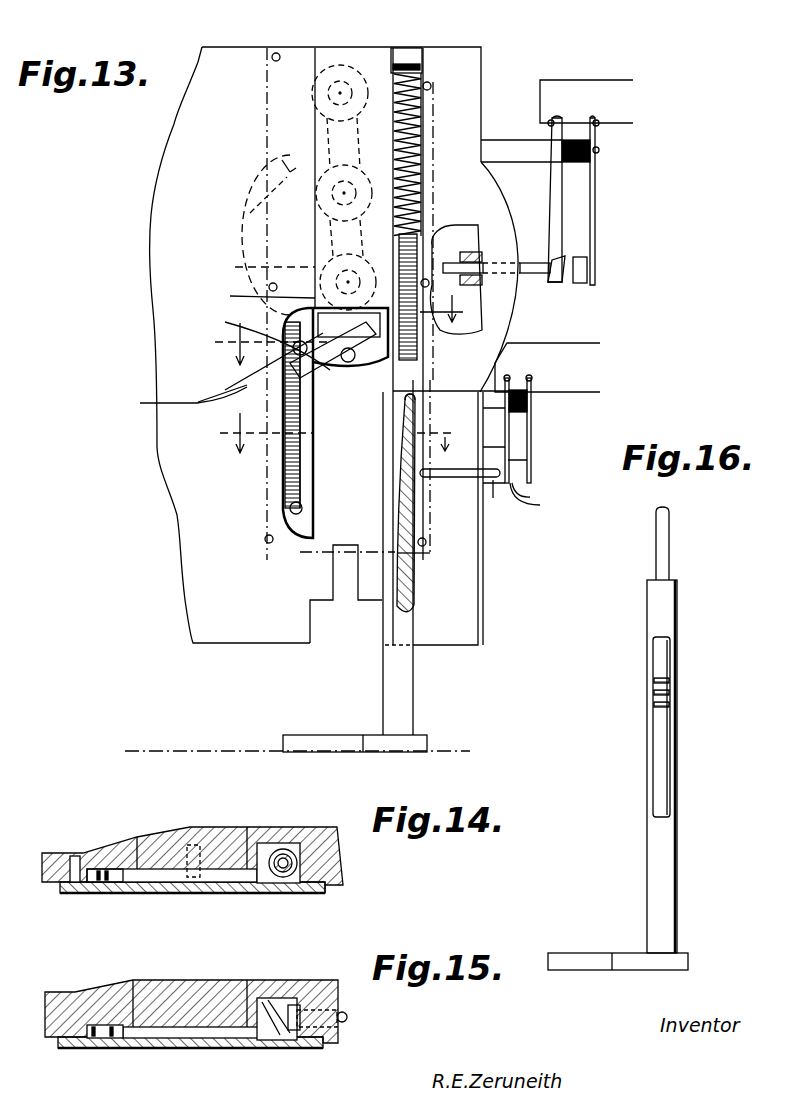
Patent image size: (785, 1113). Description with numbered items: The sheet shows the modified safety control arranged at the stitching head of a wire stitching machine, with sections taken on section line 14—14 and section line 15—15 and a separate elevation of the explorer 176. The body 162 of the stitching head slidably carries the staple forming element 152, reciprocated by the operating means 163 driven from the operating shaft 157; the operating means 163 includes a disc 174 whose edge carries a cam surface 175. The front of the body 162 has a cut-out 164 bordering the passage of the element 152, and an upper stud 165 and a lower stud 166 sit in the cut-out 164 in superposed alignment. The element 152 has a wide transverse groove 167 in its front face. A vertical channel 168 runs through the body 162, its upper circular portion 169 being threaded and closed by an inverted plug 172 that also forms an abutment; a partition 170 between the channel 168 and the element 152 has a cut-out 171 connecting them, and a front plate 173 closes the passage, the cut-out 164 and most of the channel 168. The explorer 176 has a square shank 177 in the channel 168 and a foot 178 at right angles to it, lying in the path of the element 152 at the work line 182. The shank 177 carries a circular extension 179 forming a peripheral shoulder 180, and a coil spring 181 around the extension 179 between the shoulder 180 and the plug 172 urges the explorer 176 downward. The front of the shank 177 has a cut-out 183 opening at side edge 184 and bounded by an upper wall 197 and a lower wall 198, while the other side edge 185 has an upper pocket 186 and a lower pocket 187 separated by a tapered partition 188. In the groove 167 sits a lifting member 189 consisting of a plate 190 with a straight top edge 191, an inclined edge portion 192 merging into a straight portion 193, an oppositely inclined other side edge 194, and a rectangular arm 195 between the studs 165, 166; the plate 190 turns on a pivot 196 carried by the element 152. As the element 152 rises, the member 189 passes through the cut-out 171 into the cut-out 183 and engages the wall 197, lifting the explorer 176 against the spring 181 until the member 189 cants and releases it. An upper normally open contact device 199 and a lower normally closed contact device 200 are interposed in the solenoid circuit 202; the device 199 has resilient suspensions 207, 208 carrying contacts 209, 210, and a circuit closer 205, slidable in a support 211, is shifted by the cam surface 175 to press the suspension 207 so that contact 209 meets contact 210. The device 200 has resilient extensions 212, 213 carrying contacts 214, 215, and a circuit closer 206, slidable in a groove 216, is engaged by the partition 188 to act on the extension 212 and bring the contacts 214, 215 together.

In FIG. 13, the section line 14 is at (351, 330).
In FIG. 13, the section line 15 is at (338, 433).
In FIG. 13, the staple forming element 152 is at (293, 560).
In FIG. 14, the staple forming element 152 is at (220, 830).
In FIG. 15, the staple forming element 152 is at (192, 995).
In FIG. 13, the operating shaft 157 is at (251, 265).
In FIG. 13, the body of the stitching head 162 is at (200, 572).
In FIG. 14, the body of the stitching head 162 is at (345, 878).
In FIG. 13, the operating means 163 is at (268, 152).
In FIG. 13, the cut-out 164 is at (283, 462).
In FIG. 14, the cut-out 164 is at (112, 868).
In FIG. 13, the upper stud 165 is at (232, 380).
In FIG. 14, the upper stud 165 is at (100, 893).
In FIG. 13, the lower stud 166 is at (285, 517).
In FIG. 15, the lower stud 166 is at (110, 1050).
In FIG. 13, the groove 167 is at (250, 293).
In FIG. 13, the channel 168 is at (426, 80).
In FIG. 14, the channel 168 is at (285, 843).
In FIG. 13, the threaded circular portion of channel 169 is at (423, 77).
In FIG. 13, the partition 170 is at (392, 146).
In FIG. 14, the partition 170 is at (240, 880).
In FIG. 15, the partition 170 is at (246, 1040).
In FIG. 13, the cut-out or groove 171 is at (417, 478).
In FIG. 13, the inverted plug 172 is at (407, 50).
In FIG. 13, the front plate 173 is at (262, 506).
In FIG. 14, the front plate 173 is at (148, 893).
In FIG. 15, the front plate 173 is at (190, 1050).
In FIG. 13, the disc 174 is at (325, 222).
In FIG. 13, the cam surface 175 is at (482, 290).
In FIG. 13, the explorer 176 is at (421, 699).
In FIG. 16, the explorer 176 is at (682, 871).
In FIG. 13, the shank 177 is at (408, 668).
In FIG. 16, the shank 177 is at (678, 631).
In FIG. 15, the shank 177 is at (280, 1043).
In FIG. 13, the foot 178 is at (374, 752).
In FIG. 16, the foot 178 is at (627, 962).
In FIG. 13, the extension 179 is at (420, 233).
In FIG. 16, the extension 179 is at (665, 537).
In FIG. 14, the extension 179 is at (283, 877).
In FIG. 13, the peripheral shoulder 180 is at (417, 368).
In FIG. 16, the peripheral shoulder 180 is at (670, 580).
In FIG. 13, the coil spring 181 is at (413, 117).
In FIG. 14, the coil spring 181 is at (297, 860).
In FIG. 13, the work line 182 is at (480, 752).
In FIG. 13, the cut-out 183 is at (380, 418).
In FIG. 15, the cut-out 183 is at (275, 998).
In FIG. 13, the side edge of shank 184 is at (386, 628).
In FIG. 16, the other side edge of shank 185 is at (665, 605).
In FIG. 14, the other side edge of shank 185 is at (168, 884).
In FIG. 13, the upper pocket 186 is at (412, 430).
In FIG. 16, the upper pocket 186 is at (660, 676).
In FIG. 13, the lower pocket 187 is at (415, 575).
In FIG. 16, the lower pocket 187 is at (658, 750).
In FIG. 15, the lower pocket 187 is at (294, 1040).
In FIG. 13, the tapered partition 188 is at (420, 466).
In FIG. 16, the tapered partition 188 is at (662, 686).
In FIG. 13, the lifting member 189 is at (280, 403).
In FIG. 13, the plate 190 is at (312, 335).
In FIG. 13, the top edge 191 is at (356, 358).
In FIG. 13, the inclined side edge portion 192 is at (398, 370).
In FIG. 13, the straight edge portion 193 is at (333, 343).
In FIG. 13, the other side edge 194 is at (188, 422).
In FIG. 13, the rectangular arm 195 is at (172, 402).
In FIG. 13, the pivot 196 is at (249, 341).
In FIG. 13, the upper wall 197 is at (400, 383).
In FIG. 13, the lower wall 198 is at (400, 530).
In FIG. 13, the upper normally opened contact device 199 is at (604, 195).
In FIG. 13, the lower normally closed contact device 200 is at (541, 421).
In FIG. 13, the solenoid circuit 202 is at (620, 86).
In FIG. 13, the circuit closer 205 is at (530, 263).
In FIG. 13, the circuit closer 206 is at (508, 501).
In FIG. 15, the circuit closer 206 is at (348, 1014).
In FIG. 13, the resilient suspension 207 is at (553, 217).
In FIG. 13, the resilient suspension 208 is at (596, 216).
In FIG. 13, the contact 209 is at (562, 260).
In FIG. 13, the contact 210 is at (588, 268).
In FIG. 13, the support 211 is at (495, 300).
In FIG. 13, the resilient extension 212 is at (535, 457).
In FIG. 13, the resilient extension 213 is at (533, 478).
In FIG. 13, the contact 214 is at (540, 506).
In FIG. 13, the contact 215 is at (540, 497).
In FIG. 13, the groove 216 is at (437, 466).